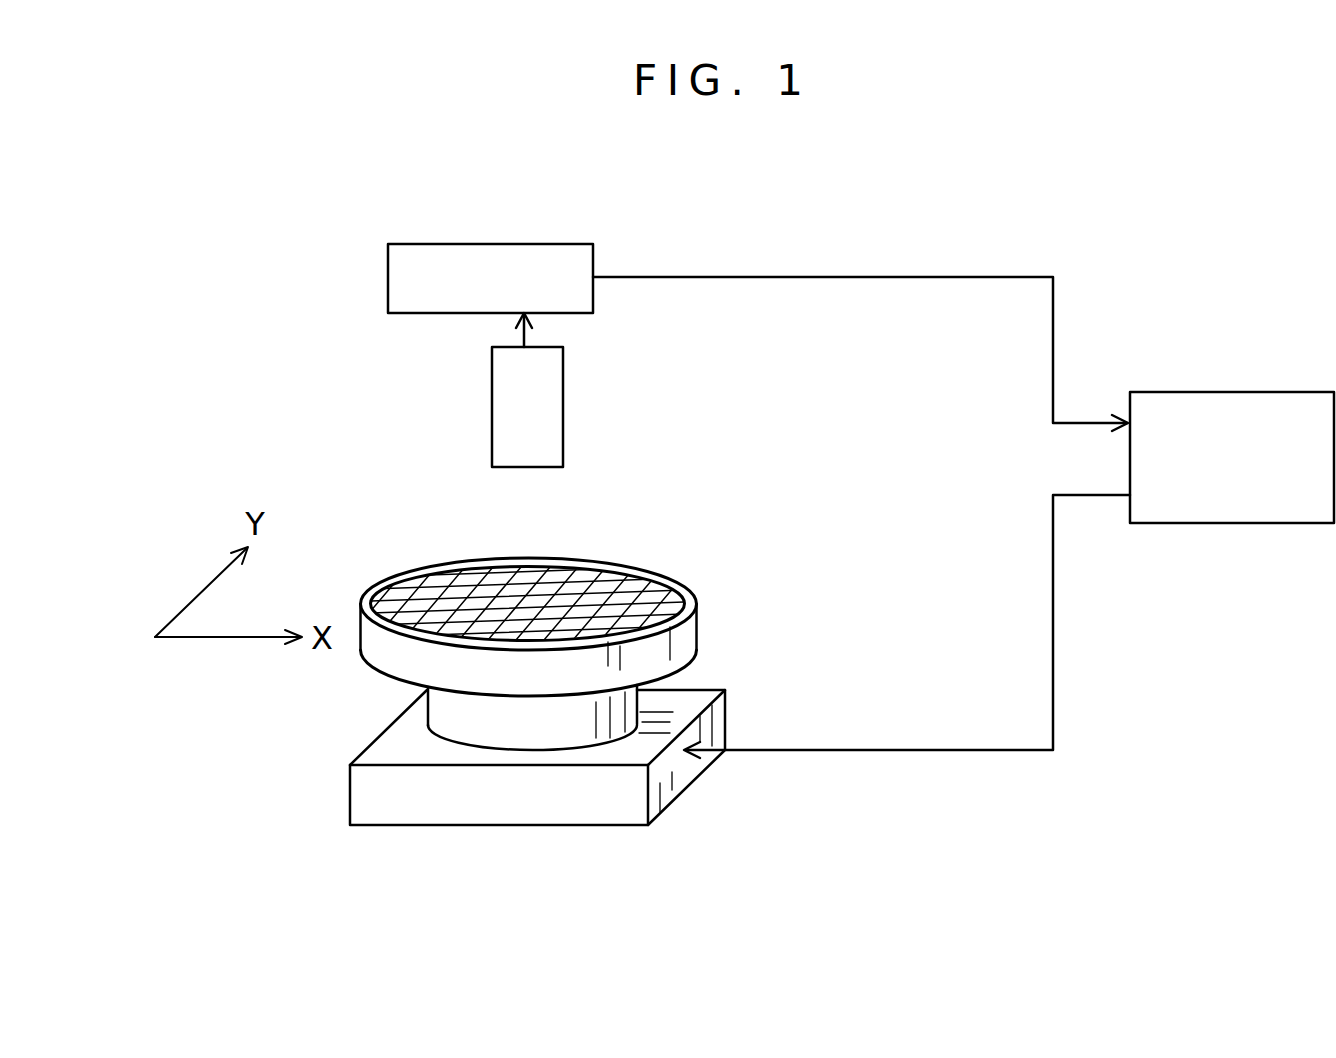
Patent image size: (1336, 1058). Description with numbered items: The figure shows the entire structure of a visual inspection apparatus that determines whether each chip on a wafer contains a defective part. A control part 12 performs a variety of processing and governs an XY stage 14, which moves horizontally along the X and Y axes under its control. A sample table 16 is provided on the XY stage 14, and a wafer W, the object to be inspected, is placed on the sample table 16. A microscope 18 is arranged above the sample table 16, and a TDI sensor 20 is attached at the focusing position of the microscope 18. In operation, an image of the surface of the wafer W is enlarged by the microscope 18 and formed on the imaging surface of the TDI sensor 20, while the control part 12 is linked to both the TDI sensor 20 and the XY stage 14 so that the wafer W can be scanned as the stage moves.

The control part 12 is at (1240, 407).
The XY stage 14 is at (488, 803).
The sample table 16 is at (677, 648).
The microscope 18 is at (548, 412).
The TDI sensor 20 is at (550, 250).
The wafer W is at (688, 592).